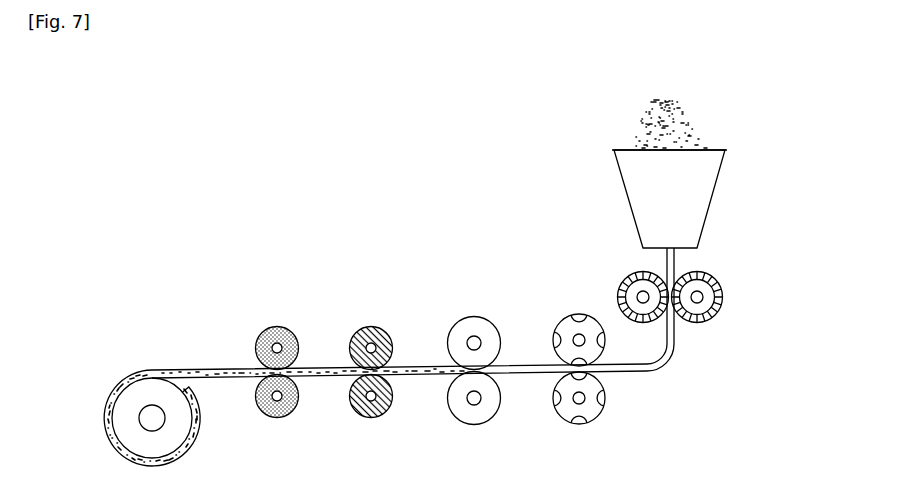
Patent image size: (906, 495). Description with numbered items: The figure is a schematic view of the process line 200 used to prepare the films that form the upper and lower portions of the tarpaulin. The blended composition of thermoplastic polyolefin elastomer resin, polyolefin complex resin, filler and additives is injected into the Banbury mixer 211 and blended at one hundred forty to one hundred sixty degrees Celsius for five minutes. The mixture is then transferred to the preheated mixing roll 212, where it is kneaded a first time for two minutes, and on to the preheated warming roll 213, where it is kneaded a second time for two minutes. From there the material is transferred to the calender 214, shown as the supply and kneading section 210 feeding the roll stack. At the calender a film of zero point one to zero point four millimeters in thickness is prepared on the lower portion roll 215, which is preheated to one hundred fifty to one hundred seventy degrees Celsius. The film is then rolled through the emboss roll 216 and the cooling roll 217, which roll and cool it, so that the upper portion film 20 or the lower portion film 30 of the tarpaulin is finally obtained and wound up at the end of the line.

The electrode manufacturing apparatus 200 is at (164, 110).
The upper portion film 20 is at (359, 357).
The lower portion film 30 is at (110, 358).
The powder supply unit 210 is at (383, 162).
The Banbury mixer 211 is at (628, 172).
The mixing roll 212 is at (723, 297).
The warming roll 213 is at (578, 424).
The calender 214 is at (476, 290).
The lower portion roll 215 is at (475, 413).
The emboss roll 216 is at (371, 418).
The cooling roll 217 is at (277, 418).